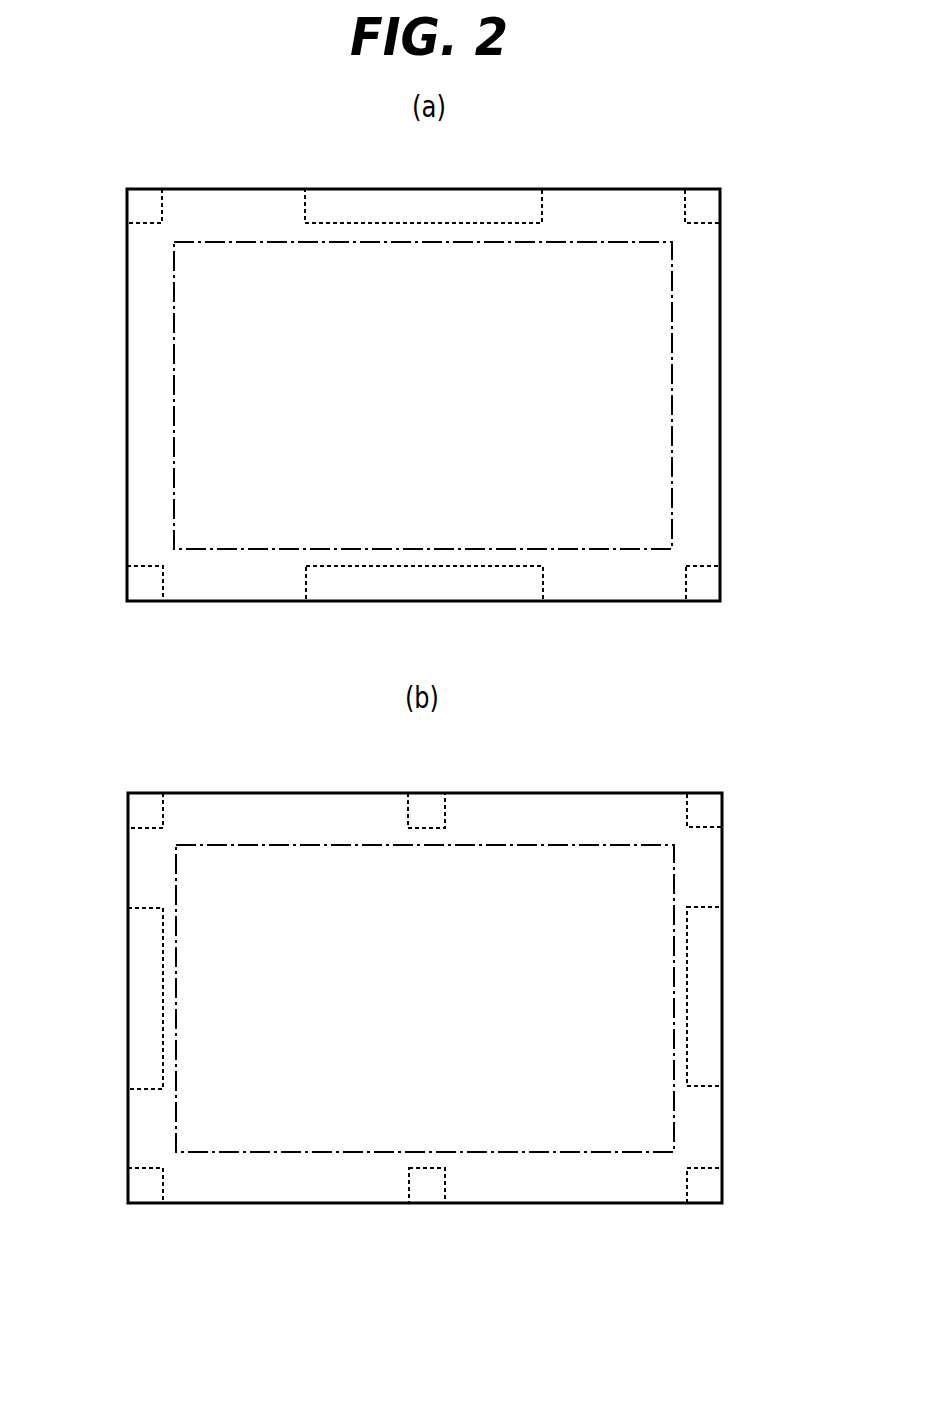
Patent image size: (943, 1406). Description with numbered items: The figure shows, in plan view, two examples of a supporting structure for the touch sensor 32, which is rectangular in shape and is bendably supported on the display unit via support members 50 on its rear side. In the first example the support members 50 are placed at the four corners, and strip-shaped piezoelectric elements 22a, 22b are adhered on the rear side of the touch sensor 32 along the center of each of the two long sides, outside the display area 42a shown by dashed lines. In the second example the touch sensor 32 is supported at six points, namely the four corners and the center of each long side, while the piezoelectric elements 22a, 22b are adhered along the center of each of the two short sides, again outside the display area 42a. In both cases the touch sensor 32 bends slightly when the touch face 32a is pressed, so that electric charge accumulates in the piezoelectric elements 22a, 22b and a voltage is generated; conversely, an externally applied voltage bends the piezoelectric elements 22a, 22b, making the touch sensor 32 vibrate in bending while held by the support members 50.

The piezoelectric element 22a is at (305, 212).
The piezoelectric element 22b is at (543, 580).
The touch sensor 32 is at (722, 347).
The touch face 32a is at (567, 335).
The display area 42a is at (673, 425).
The support member 50 is at (141, 227).